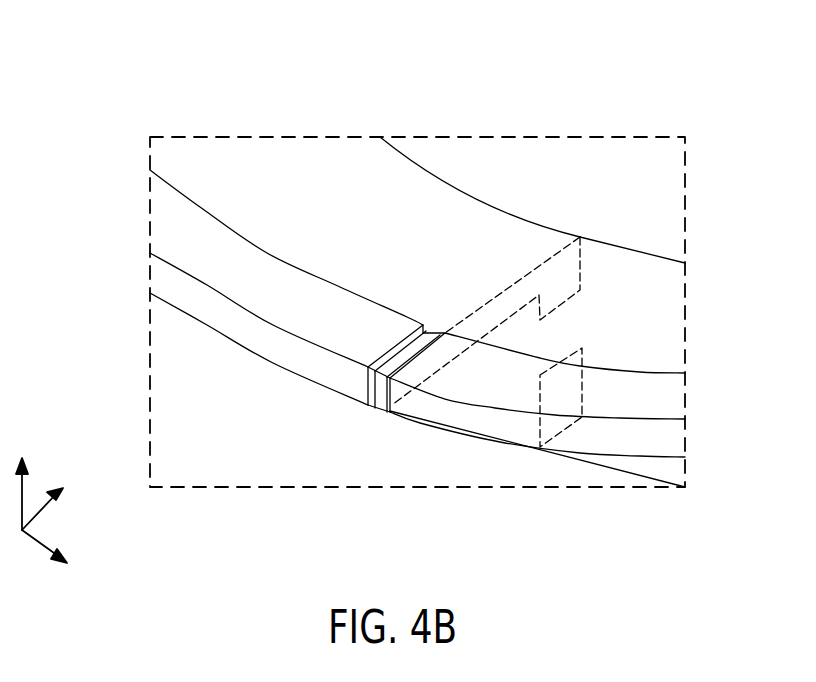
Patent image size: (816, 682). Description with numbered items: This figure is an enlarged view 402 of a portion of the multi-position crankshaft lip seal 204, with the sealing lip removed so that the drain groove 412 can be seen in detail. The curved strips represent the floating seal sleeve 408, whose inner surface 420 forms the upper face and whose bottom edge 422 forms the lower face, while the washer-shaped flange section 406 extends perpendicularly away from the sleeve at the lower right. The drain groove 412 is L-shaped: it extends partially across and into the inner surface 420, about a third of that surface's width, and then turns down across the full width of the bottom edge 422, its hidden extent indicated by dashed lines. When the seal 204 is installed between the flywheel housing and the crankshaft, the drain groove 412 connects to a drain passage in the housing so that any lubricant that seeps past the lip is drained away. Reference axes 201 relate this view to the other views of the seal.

The enlarged view 402 is at (609, 101).
The floating seal sleeve 408 is at (342, 223).
The bottom edge 422 is at (285, 357).
The inner surface 420 is at (433, 188).
The multi-position crankshaft lip seal 204 is at (646, 325).
The drain groove 412 is at (374, 413).
The flange section 406 is at (669, 481).
The reference axes 201 is at (63, 460).